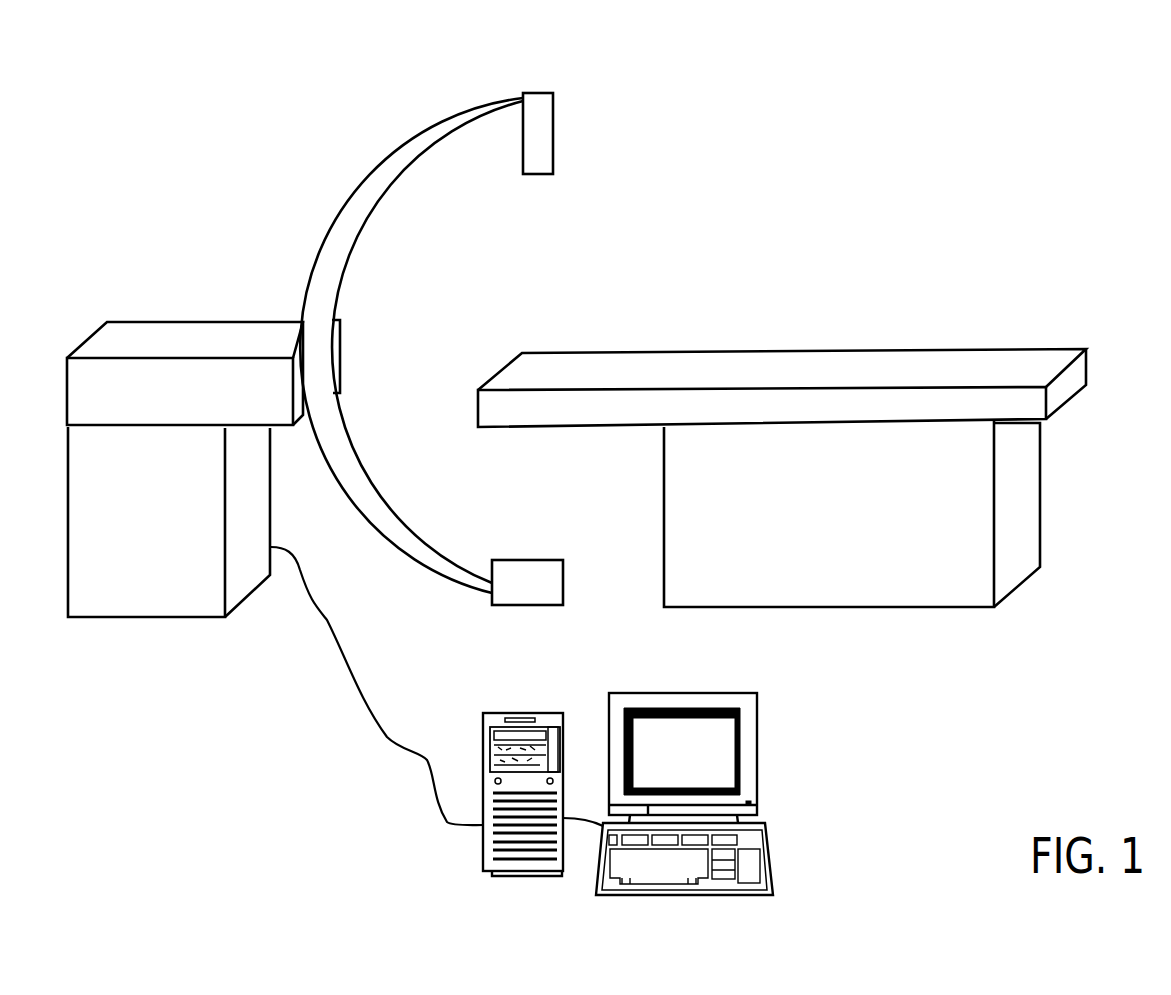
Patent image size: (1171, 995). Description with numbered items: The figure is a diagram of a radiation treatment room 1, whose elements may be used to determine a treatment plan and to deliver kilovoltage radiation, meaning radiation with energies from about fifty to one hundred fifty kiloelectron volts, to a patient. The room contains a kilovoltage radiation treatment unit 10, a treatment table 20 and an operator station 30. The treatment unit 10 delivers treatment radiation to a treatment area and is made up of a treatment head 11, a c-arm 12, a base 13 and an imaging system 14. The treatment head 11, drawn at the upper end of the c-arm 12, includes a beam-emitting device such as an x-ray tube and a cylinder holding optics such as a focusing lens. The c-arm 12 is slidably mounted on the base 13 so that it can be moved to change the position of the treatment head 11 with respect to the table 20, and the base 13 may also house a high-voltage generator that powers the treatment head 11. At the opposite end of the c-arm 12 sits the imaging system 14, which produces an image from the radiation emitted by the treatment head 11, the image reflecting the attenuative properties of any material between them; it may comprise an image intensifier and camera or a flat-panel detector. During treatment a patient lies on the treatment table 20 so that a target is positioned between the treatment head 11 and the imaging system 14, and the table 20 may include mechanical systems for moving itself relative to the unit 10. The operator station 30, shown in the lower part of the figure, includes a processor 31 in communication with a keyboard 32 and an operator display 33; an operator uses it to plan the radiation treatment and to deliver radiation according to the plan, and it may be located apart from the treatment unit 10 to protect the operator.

The radiation treatment room 1 is at (745, 46).
The kilovoltage radiation treatment unit 10 is at (585, 209).
The treatment head 11 is at (543, 93).
The c-arm 12 is at (397, 152).
The base 13 is at (178, 320).
The imaging system 14 is at (525, 560).
The treatment table 20 is at (990, 348).
The operator station 30 is at (792, 740).
The processor 31 is at (540, 713).
The keyboard 32 is at (772, 858).
The operator display 33 is at (685, 693).